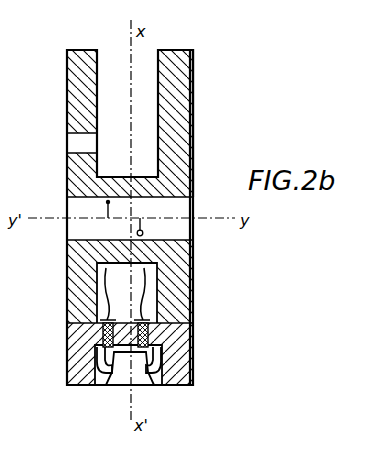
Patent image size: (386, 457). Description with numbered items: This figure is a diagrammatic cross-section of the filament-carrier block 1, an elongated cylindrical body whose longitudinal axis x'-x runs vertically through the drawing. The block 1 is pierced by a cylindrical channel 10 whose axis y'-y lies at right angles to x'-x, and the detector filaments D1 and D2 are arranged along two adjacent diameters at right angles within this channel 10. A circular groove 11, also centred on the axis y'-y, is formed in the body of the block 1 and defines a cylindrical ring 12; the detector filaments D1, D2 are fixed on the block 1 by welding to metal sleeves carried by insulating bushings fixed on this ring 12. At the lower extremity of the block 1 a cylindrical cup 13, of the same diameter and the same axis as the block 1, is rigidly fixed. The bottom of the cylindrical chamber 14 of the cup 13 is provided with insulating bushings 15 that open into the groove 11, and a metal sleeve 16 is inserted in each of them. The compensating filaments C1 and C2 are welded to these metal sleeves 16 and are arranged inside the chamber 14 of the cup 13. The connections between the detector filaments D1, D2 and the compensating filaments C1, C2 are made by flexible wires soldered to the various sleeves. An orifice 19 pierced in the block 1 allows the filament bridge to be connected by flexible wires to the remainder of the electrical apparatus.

The filament-carrier block 1 is at (186, 142).
The cylindrical channel 10 is at (78, 236).
The circular groove 11 is at (113, 65).
The cylindrical ring 12 is at (121, 178).
The cylindrical cup 13 is at (178, 364).
The cylindrical chamber 14 is at (122, 385).
The insulating bushings 15 is at (150, 333).
The metal sleeve 16 is at (130, 281).
The orifice 19 is at (76, 138).
The detector filament D1 is at (105, 203).
The detector filament D2 is at (143, 233).
The compensating filament C1 is at (100, 385).
The compensating filament C2 is at (158, 385).